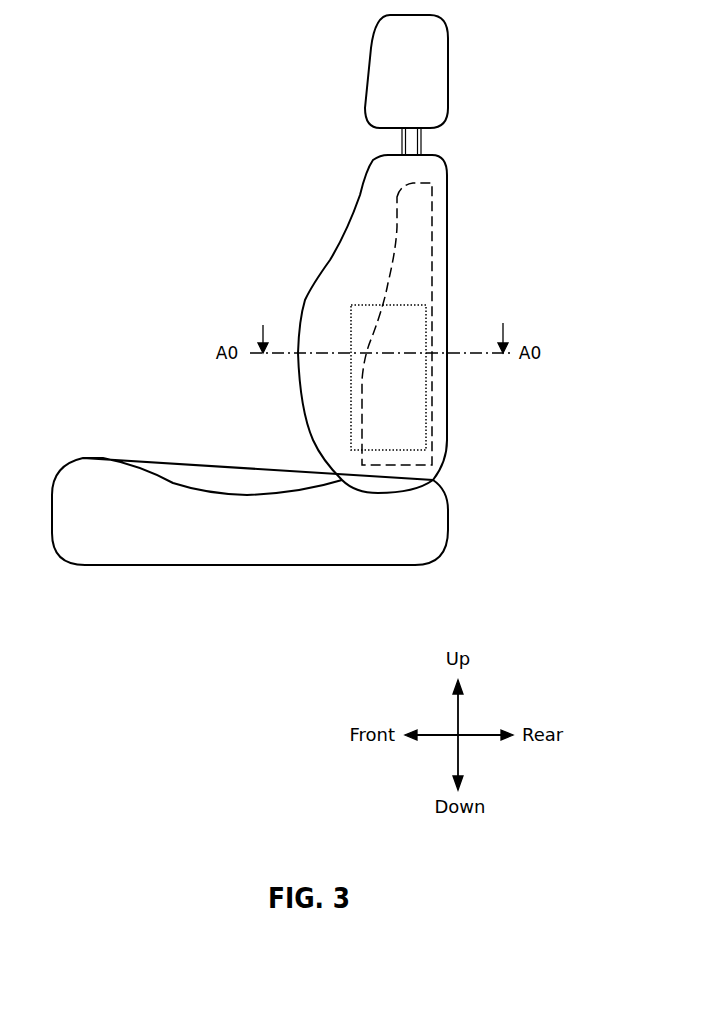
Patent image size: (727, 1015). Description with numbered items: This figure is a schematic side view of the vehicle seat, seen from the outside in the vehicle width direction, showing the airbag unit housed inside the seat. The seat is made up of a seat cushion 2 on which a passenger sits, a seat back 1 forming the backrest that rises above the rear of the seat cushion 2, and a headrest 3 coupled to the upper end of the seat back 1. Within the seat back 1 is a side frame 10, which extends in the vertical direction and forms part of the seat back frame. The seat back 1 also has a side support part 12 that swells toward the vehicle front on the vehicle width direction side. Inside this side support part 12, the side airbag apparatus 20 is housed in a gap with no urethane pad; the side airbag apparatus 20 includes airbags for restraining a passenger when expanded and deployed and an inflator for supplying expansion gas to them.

The seat back 1 is at (292, 290).
The seat cushion 2 is at (97, 458).
The headrest 3 is at (448, 62).
The side frame 10 is at (434, 265).
The side support part 12 is at (303, 300).
The side airbag apparatus 20 is at (352, 393).